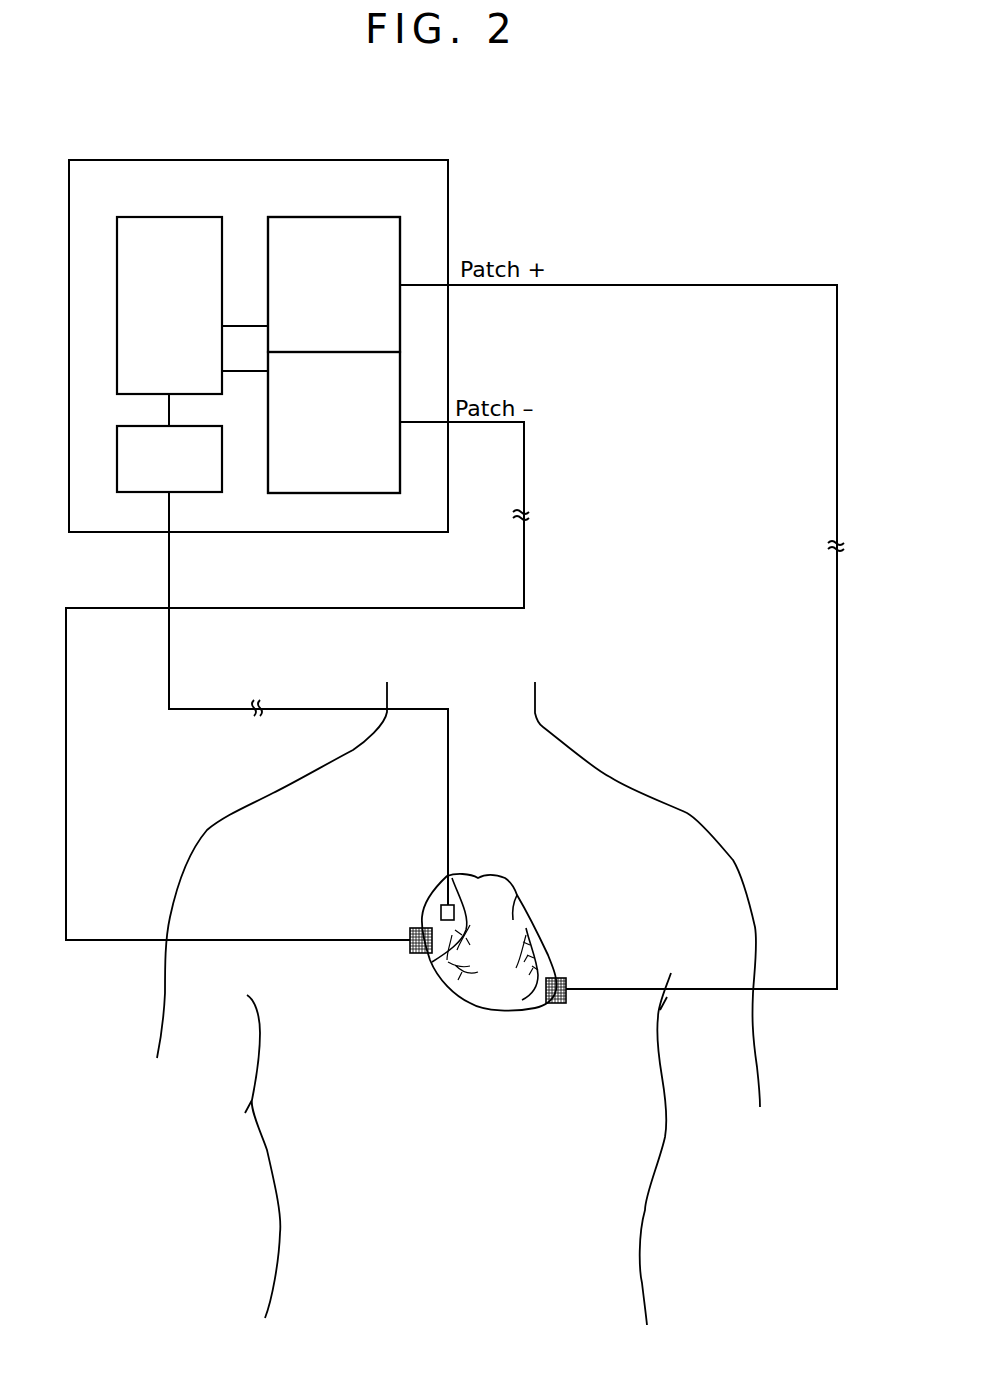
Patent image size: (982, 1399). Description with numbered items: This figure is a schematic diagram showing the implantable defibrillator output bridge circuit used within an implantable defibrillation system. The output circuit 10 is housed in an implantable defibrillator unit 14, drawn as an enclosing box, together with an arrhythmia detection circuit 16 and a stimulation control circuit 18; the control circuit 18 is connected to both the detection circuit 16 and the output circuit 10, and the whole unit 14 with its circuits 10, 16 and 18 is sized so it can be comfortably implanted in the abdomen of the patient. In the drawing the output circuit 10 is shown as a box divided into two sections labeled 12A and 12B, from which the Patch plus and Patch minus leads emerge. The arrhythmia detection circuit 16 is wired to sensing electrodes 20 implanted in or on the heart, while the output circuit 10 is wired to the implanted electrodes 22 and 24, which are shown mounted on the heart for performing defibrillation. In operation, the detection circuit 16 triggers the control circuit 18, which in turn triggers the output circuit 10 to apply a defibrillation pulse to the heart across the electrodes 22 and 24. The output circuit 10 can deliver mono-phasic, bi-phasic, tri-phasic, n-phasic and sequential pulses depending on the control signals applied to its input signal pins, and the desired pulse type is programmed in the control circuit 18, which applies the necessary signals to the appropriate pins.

The output circuit 10 is at (329, 217).
The first pulse generator section 12A is at (352, 293).
The second pulse generator section 12B is at (352, 433).
The implantable defibrillator unit 14 is at (448, 190).
The arrhythmia detection circuit 16 is at (183, 473).
The stimulation control circuit 18 is at (183, 312).
The sensing electrodes 20 is at (441, 908).
The implanted electrode 22 is at (412, 945).
The implanted electrode 24 is at (566, 987).